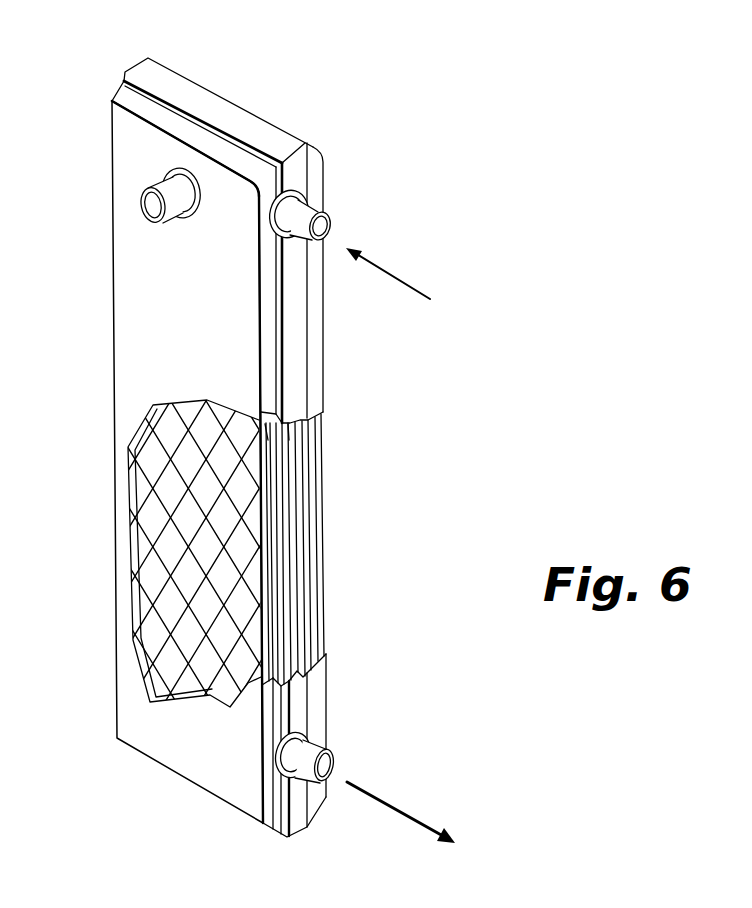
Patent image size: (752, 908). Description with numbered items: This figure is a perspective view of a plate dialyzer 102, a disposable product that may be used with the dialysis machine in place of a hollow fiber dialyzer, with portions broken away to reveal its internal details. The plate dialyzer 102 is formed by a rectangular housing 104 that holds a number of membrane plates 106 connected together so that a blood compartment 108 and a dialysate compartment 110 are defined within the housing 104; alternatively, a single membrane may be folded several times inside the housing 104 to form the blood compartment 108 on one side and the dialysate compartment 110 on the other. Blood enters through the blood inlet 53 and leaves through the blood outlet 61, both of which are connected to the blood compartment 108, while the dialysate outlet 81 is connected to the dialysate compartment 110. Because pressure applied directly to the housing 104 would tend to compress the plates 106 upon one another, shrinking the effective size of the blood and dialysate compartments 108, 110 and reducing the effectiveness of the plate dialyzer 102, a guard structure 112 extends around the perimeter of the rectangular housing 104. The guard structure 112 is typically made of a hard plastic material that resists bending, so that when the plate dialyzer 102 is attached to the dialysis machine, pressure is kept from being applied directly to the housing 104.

The plate dialyzer 102 is at (392, 151).
The rectangular housing 104 is at (168, 342).
The guard structure 112 is at (202, 100).
The dialysate compartment 110 is at (288, 449).
The membrane plates 106 is at (300, 548).
The blood compartment 108 is at (298, 655).
The dialysate outlet 81 is at (167, 195).
The blood inlet 53 is at (300, 220).
The blood outlet 61 is at (312, 760).